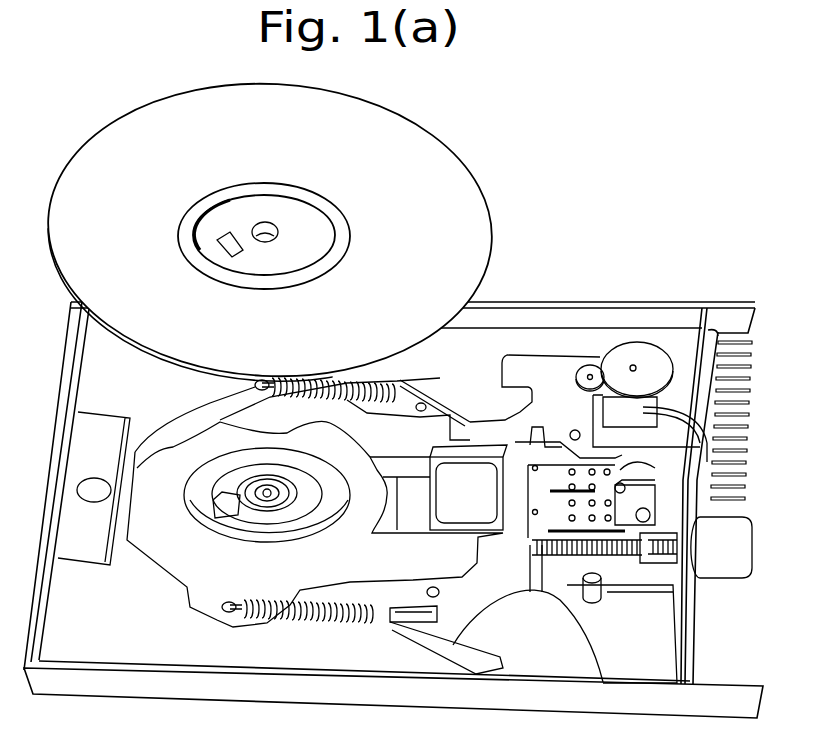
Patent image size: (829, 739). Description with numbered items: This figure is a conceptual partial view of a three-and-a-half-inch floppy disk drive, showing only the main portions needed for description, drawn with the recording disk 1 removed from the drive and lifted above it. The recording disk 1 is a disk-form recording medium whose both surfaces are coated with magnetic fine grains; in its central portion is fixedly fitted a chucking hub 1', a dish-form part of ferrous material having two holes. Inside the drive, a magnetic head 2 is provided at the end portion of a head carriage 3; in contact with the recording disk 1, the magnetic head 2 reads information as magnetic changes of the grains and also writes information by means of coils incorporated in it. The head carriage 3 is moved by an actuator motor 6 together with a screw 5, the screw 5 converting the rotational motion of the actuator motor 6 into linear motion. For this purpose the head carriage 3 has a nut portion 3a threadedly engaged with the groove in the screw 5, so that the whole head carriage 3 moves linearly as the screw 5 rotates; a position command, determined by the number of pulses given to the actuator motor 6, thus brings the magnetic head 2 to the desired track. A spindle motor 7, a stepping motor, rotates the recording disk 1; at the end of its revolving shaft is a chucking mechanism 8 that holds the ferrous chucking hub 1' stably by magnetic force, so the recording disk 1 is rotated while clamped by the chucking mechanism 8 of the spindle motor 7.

The recording disk 1 is at (270, 233).
The chucking hub 1' is at (355, 229).
The magnetic head 2 is at (470, 473).
The head carriage 3 is at (545, 475).
The nut portion 3a is at (653, 558).
The screw 5 is at (610, 553).
The actuator motor 6 is at (740, 543).
The spindle motor 7 is at (203, 452).
The chucking mechanism 8 is at (190, 516).